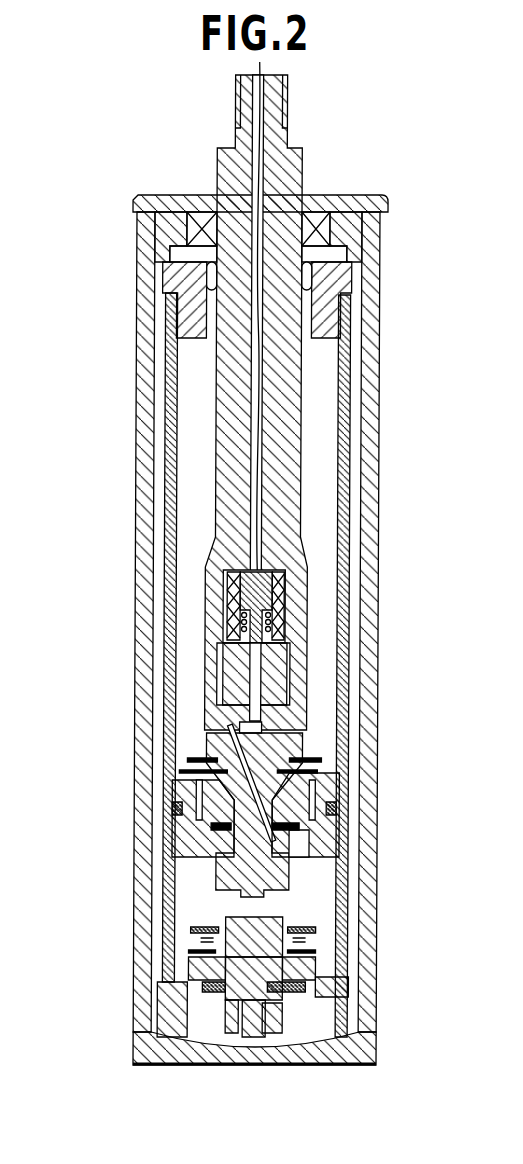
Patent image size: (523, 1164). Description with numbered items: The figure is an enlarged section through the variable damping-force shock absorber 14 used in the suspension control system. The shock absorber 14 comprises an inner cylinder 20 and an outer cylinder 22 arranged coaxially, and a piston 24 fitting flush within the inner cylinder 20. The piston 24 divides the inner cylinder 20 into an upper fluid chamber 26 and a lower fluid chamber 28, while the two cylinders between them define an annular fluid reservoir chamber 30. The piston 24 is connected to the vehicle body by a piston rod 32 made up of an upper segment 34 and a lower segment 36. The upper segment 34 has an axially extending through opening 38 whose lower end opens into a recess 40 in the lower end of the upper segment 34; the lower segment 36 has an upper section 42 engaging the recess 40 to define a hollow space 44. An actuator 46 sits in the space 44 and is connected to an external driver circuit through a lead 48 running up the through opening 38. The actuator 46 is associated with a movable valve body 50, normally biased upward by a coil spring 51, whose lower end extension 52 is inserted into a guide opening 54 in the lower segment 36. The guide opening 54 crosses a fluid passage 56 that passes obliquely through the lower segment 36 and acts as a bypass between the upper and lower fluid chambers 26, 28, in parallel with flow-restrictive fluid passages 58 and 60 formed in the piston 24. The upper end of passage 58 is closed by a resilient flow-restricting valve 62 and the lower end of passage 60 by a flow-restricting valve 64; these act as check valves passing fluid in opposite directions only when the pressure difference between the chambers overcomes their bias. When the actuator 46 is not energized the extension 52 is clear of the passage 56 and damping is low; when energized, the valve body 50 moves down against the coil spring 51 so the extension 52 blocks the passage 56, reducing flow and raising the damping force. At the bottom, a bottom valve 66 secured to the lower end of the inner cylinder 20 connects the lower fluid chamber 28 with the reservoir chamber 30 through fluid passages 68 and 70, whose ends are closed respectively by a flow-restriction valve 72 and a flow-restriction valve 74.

The shock absorber 14 is at (128, 243).
The inner cylinder 20 is at (345, 455).
The outer cylinder 22 is at (378, 351).
The piston 24 is at (353, 822).
The upper fluid chamber 26 is at (176, 514).
The lower fluid chamber 28 is at (182, 889).
The fluid reservoir chamber 30 is at (355, 545).
The piston rod 32 is at (310, 396).
The upper segment 34 is at (203, 454).
The lower segment 36 is at (261, 653).
The through opening 38 is at (259, 418).
The recess 40 is at (261, 682).
The upper section 42 is at (290, 673).
The hollow space 44 is at (283, 616).
The actuator 46 is at (229, 606).
The lead 48 is at (258, 255).
The movable valve body 50 is at (242, 678).
The coil spring 51 is at (233, 628).
The lower end extension 52 is at (262, 712).
The guide opening 54 is at (232, 728).
The fluid passage 56 is at (195, 810).
The fluid passage 58 is at (185, 795).
The fluid passage 60 is at (300, 825).
The flow-restricting valve 62 is at (193, 775).
The flow-restricting valve 64 is at (308, 845).
The bottom valve 66 is at (224, 1001).
The fluid passage 68 is at (188, 967).
The fluid passage 70 is at (347, 968).
The flow-restriction valve 72 is at (188, 952).
The flow-restriction valve 74 is at (295, 993).